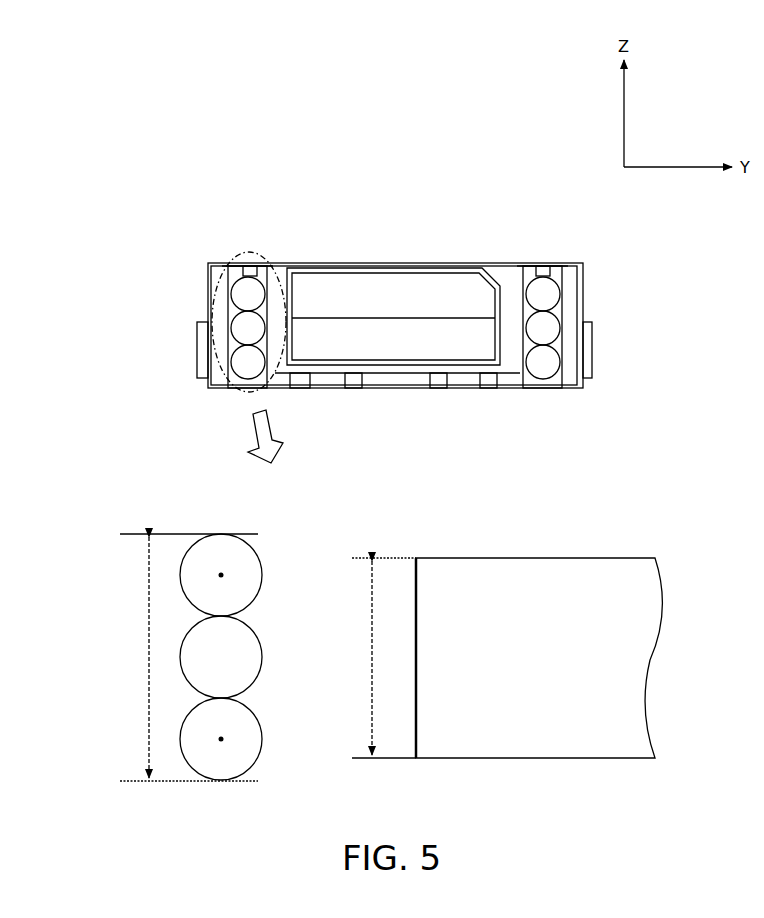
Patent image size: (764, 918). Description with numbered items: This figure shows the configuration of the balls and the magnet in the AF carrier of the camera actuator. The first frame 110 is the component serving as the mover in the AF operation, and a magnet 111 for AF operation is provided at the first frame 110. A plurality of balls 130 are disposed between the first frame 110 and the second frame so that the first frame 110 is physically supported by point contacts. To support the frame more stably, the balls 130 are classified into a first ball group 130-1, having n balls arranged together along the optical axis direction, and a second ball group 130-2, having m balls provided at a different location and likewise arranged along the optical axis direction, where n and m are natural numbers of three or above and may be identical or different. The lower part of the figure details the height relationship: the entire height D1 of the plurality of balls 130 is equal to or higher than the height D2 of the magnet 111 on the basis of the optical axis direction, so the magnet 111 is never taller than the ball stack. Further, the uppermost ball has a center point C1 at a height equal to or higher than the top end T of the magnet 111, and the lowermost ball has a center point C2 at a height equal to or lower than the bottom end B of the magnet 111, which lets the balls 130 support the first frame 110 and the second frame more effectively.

The first frame 110 is at (356, 256).
The magnet 111 is at (390, 348).
The balls 130 is at (394, 322).
The first ball group 130-1 is at (245, 325).
The second ball group 130-2 is at (545, 328).
The center point of uppermost ball C1 is at (221, 575).
The center point of lowermost ball C2 is at (221, 739).
The entire height of the plurality of balls D1 is at (134, 657).
The height of the magnet D2 is at (357, 658).
The top end T is at (424, 556).
The bottom end B is at (428, 760).